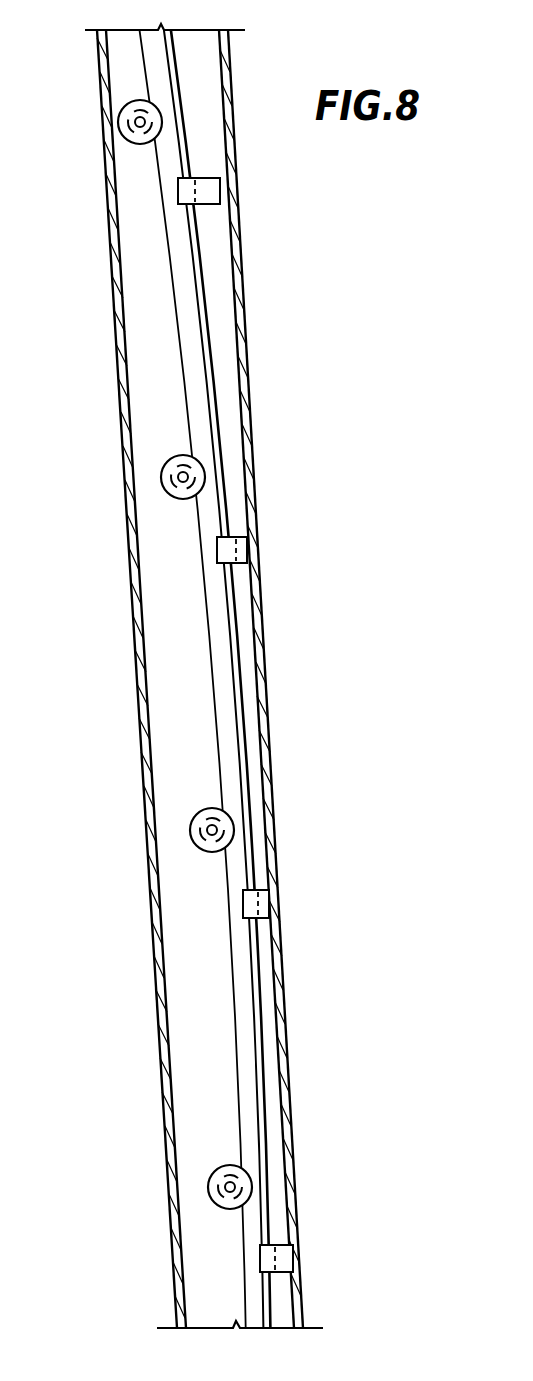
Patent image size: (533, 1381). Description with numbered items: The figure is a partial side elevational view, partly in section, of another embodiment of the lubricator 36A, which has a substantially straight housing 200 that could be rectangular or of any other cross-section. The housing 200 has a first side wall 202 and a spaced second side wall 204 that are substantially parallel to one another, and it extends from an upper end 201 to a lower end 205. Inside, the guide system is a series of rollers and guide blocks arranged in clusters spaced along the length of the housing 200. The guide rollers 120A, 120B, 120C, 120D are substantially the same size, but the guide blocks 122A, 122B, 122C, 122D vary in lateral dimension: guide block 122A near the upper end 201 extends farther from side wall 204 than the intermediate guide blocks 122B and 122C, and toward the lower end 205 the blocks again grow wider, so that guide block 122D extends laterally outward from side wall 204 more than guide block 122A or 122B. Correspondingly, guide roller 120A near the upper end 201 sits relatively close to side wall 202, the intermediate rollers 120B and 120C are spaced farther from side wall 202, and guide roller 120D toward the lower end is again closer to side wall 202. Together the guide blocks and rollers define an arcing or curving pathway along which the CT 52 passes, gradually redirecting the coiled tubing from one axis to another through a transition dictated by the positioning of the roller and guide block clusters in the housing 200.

The lubricator 36A is at (287, 679).
The CT 52 is at (203, 271).
The guide roller 120A is at (127, 147).
The guide roller 120B is at (163, 483).
The guide roller 120C is at (193, 842).
The guide roller 120D is at (207, 1181).
The guide block 122A is at (238, 190).
The guide block 122B is at (250, 548).
The guide block 122C is at (270, 903).
The guide block 122D is at (292, 1259).
The housing 200 is at (250, 437).
The upper end 201 is at (98, 95).
The first side wall 202 is at (100, 679).
The second side wall 204 is at (267, 682).
The lower end 205 is at (172, 1282).